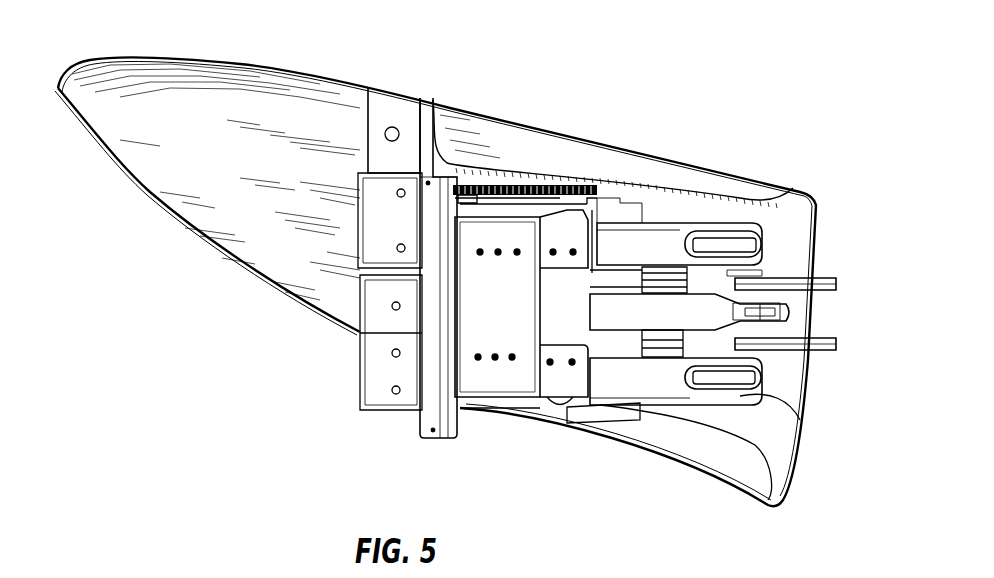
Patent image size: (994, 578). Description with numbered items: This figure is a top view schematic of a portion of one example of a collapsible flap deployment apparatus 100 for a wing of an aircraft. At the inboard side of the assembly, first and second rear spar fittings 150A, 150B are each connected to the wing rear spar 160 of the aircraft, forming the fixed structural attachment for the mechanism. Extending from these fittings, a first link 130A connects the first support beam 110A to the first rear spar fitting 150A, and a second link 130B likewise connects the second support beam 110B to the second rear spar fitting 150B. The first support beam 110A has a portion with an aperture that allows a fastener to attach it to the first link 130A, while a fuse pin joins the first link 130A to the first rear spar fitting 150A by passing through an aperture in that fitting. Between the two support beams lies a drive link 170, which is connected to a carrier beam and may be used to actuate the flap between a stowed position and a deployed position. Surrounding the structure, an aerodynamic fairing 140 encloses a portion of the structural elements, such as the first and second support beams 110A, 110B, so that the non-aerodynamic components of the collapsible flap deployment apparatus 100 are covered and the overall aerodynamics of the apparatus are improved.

The collapsible flap deployment apparatus 100 is at (722, 85).
The aerodynamic fairing 140 is at (137, 157).
The wing rear spar 160 is at (520, 324).
The first rear spar fitting 150A is at (623, 228).
The second rear spar fitting 150B is at (660, 390).
The first link 130A is at (731, 230).
The second link 130B is at (724, 382).
The first support beam 110A is at (781, 266).
The second support beam 110B is at (781, 372).
The drive link 170 is at (790, 318).